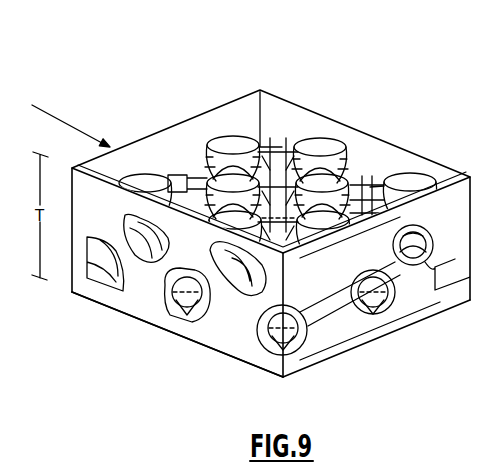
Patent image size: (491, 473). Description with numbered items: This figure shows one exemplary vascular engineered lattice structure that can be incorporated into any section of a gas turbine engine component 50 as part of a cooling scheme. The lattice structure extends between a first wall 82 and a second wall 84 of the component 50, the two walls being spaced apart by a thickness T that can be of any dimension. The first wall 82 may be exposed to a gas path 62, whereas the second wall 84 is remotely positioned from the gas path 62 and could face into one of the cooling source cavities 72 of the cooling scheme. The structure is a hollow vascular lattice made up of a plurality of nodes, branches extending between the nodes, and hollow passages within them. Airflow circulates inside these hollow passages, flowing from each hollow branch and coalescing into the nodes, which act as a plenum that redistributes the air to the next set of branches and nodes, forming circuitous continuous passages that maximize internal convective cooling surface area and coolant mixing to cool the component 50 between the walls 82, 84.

The component 50 is at (312, 68).
The gas path 62 is at (66, 123).
The cooling source cavity 72 is at (239, 401).
The first wall 82 is at (131, 156).
The second wall 84 is at (133, 318).